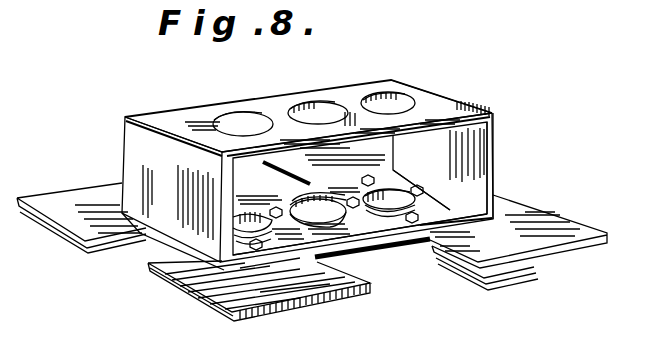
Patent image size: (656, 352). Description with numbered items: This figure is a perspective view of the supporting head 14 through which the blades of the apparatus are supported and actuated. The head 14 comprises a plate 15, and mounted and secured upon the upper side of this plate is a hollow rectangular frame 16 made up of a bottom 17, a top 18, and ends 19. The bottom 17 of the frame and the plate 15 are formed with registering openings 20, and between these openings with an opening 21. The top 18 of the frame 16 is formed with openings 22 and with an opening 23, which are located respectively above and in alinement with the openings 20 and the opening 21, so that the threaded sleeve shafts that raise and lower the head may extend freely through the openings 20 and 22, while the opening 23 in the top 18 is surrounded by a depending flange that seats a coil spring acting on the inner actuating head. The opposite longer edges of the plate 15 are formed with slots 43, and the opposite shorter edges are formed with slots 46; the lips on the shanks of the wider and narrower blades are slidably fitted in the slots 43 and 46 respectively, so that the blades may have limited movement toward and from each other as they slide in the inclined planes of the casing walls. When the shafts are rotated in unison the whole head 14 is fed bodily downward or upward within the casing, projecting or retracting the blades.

The supporting head 14 is at (470, 236).
The plate 15 is at (513, 227).
The hollow rectangular frame 16 is at (465, 106).
The bottom 17 is at (443, 213).
The top 18 is at (428, 102).
The ends 19 is at (488, 147).
The registering openings 20 is at (252, 216).
The opening 21 is at (313, 217).
The openings 22 is at (244, 118).
The opening 23 is at (303, 114).
The slot 43 is at (508, 265).
The slot 46 is at (160, 283).